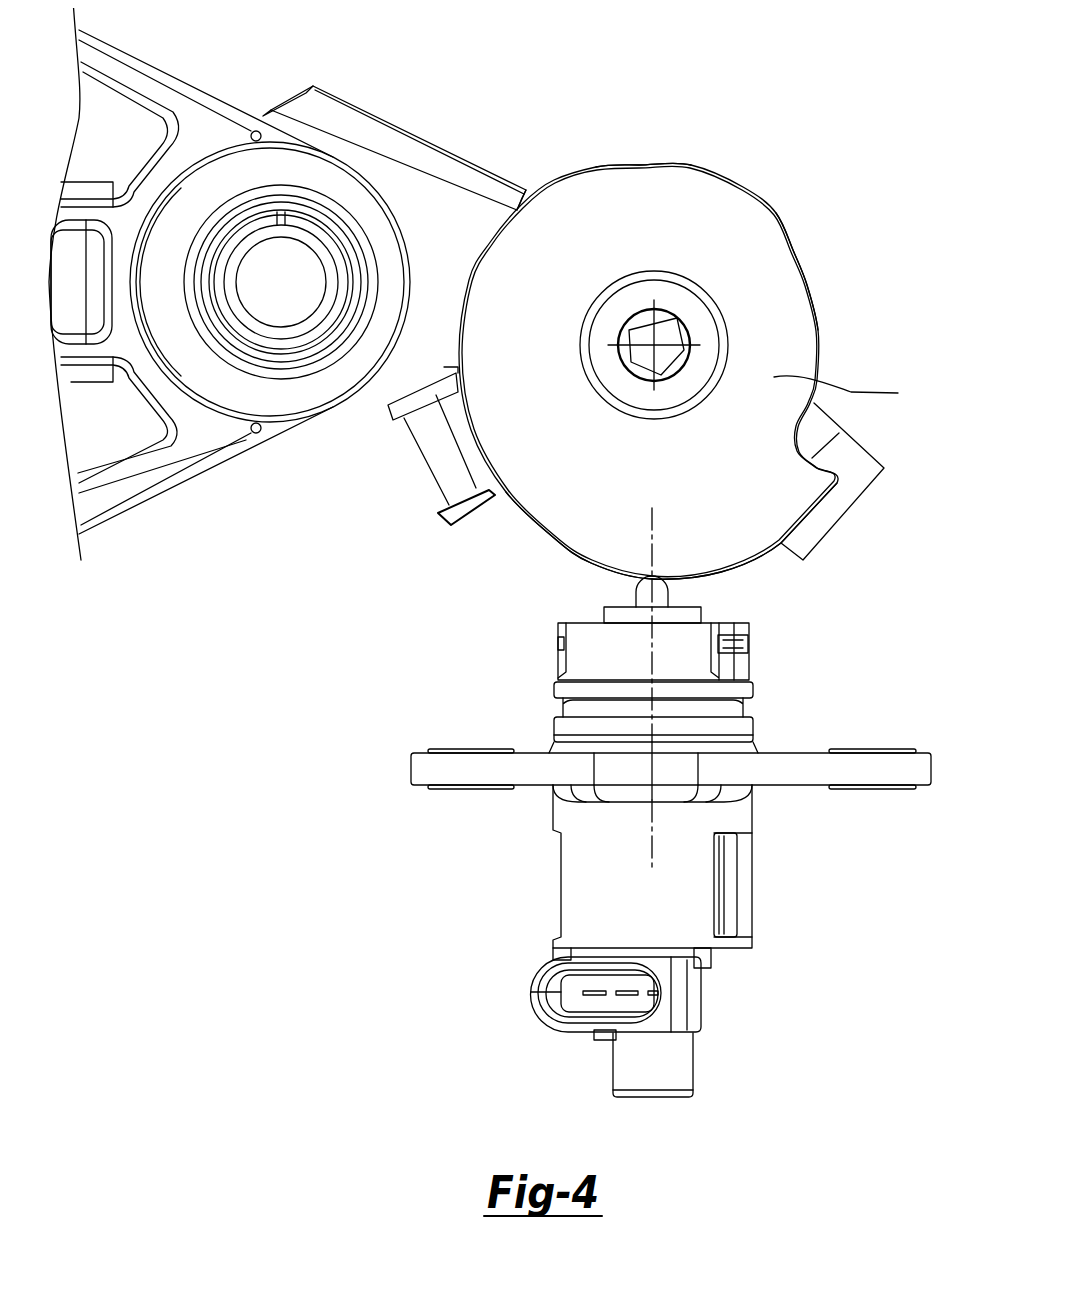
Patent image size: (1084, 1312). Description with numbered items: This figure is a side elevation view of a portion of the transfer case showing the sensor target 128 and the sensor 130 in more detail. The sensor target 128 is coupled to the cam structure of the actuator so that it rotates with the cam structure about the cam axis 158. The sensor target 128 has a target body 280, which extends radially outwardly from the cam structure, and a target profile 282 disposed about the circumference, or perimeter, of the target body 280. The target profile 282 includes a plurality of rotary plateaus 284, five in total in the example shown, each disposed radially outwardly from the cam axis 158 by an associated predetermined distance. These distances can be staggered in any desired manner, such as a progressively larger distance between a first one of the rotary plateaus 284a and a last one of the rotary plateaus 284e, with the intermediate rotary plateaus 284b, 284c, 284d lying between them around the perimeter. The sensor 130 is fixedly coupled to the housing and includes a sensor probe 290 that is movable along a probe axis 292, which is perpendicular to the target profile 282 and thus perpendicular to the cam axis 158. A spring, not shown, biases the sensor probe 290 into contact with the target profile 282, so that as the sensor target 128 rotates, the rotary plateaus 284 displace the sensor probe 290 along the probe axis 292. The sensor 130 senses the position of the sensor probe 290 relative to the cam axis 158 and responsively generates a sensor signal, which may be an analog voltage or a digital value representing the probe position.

The sensor target 128 is at (853, 391).
The sensor 130 is at (670, 920).
The cam axis 158 is at (655, 348).
The target body 280 is at (660, 194).
The target profile 282 is at (808, 400).
The rotary plateaus 284 is at (468, 455).
The first rotary plateau 284a is at (750, 573).
The rotary plateau 284b is at (482, 505).
The rotary plateau 284c is at (465, 270).
The rotary plateau 284d is at (656, 152).
The last rotary plateau 284e is at (802, 276).
The sensor probe 290 is at (647, 591).
The probe axis 292 is at (651, 822).